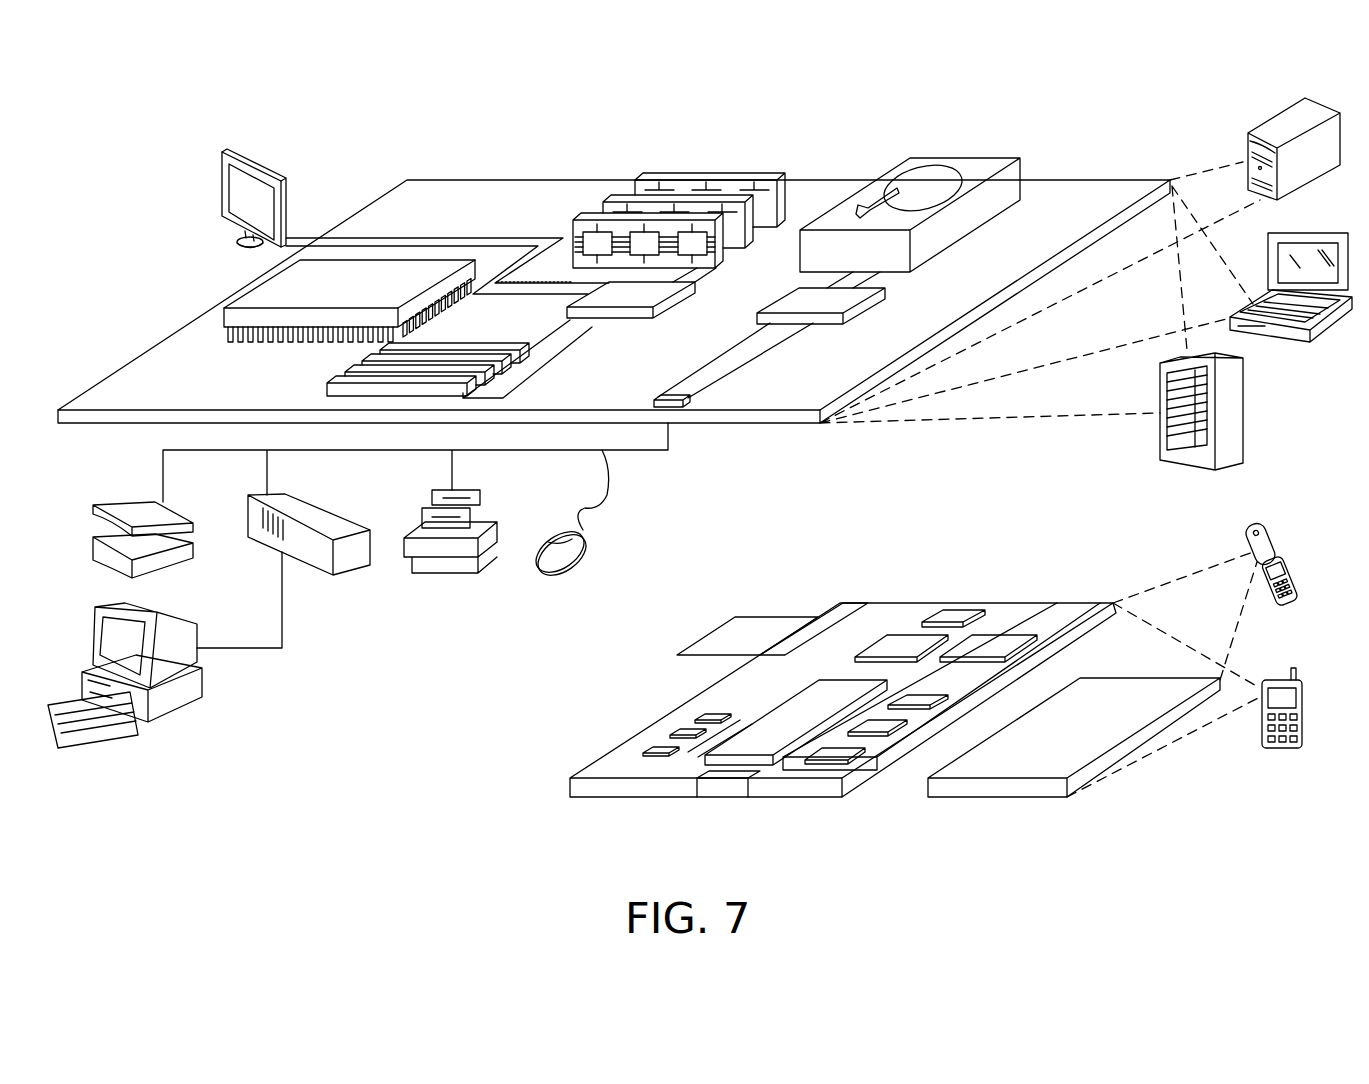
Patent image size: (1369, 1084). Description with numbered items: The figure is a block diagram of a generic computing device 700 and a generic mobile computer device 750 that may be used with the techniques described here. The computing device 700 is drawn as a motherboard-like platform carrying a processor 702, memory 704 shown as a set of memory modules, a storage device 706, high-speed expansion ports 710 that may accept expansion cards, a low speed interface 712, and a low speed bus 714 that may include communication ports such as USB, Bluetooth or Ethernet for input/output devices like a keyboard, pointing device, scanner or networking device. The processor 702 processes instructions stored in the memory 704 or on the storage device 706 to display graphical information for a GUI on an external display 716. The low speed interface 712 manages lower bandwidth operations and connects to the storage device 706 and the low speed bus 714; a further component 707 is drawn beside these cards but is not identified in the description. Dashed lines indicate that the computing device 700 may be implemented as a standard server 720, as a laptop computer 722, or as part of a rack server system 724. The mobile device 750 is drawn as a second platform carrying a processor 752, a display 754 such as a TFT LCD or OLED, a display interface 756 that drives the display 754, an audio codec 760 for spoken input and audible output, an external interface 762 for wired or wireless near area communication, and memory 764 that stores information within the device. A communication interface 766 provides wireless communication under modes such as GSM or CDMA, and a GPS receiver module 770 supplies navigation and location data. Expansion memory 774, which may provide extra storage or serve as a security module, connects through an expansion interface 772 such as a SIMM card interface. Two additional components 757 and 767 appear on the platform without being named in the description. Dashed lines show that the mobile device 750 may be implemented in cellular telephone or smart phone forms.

The computing device 700 is at (362, 131).
The processor 702 is at (248, 290).
The memory 704 is at (713, 176).
The storage device 706 is at (952, 157).
The controller card 707 is at (645, 294).
The high-speed expansion ports 710 is at (352, 370).
The low speed interface 712 is at (792, 300).
The low speed bus 714 is at (672, 395).
The display 716 is at (226, 150).
The standard server 720 is at (1268, 128).
The laptop computer 722 is at (1326, 232).
The rack server system 724 is at (1246, 413).
The mobile computer device 750 is at (528, 801).
The processor 752 is at (763, 728).
The display 754 is at (1114, 694).
The display interface 756 is at (848, 752).
The memory component 757 is at (885, 726).
The audio codec 760 is at (922, 694).
The external interface 762 is at (723, 786).
The memory 764 is at (672, 733).
The communication interface 766 is at (900, 636).
The communication module 767 is at (995, 638).
The GPS receiver module 770 is at (955, 608).
The expansion interface 772 is at (830, 616).
The expansion memory 774 is at (737, 616).